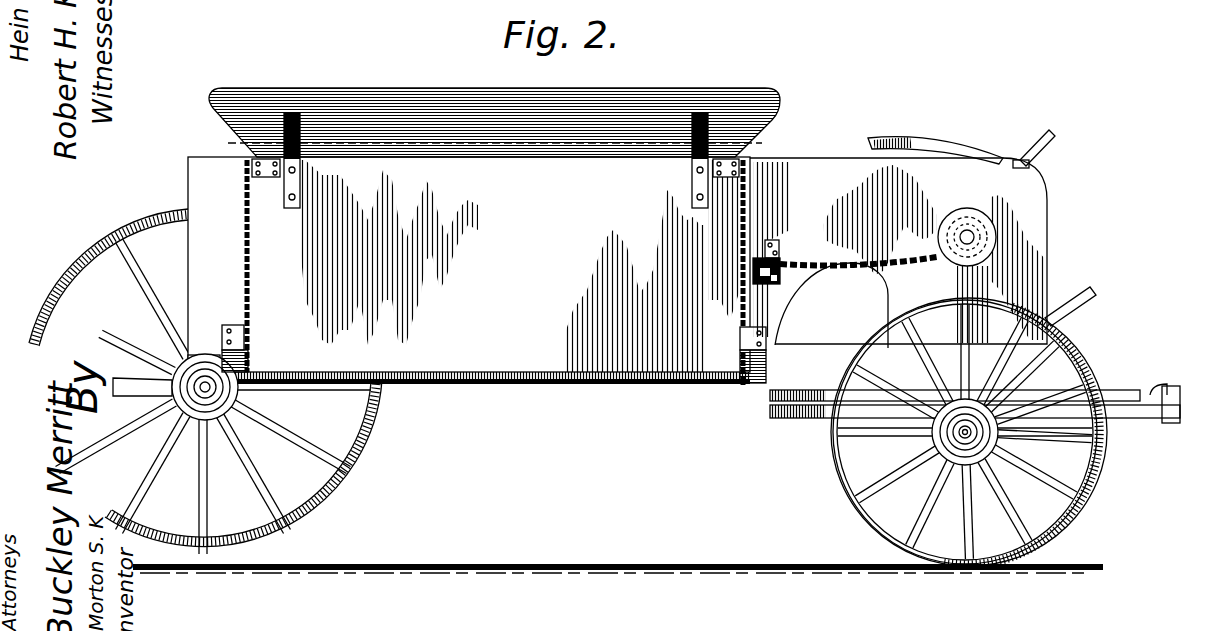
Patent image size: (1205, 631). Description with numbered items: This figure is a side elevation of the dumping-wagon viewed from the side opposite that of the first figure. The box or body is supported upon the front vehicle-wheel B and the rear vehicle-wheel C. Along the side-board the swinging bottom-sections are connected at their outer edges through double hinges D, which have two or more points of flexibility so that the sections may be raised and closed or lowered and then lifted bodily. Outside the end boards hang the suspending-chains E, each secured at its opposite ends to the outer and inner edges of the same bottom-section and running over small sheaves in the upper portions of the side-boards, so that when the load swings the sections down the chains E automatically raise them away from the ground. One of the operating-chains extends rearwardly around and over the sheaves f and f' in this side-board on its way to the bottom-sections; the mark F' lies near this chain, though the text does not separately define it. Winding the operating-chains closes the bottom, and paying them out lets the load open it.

The suspending-chain E is at (249, 256).
The double hinge D is at (250, 338).
The sheave f is at (791, 235).
The sheave f' is at (783, 292).
The reel chain F' is at (858, 238).
The rear vehicle-wheel C is at (386, 450).
The front vehicle-wheel B is at (838, 481).